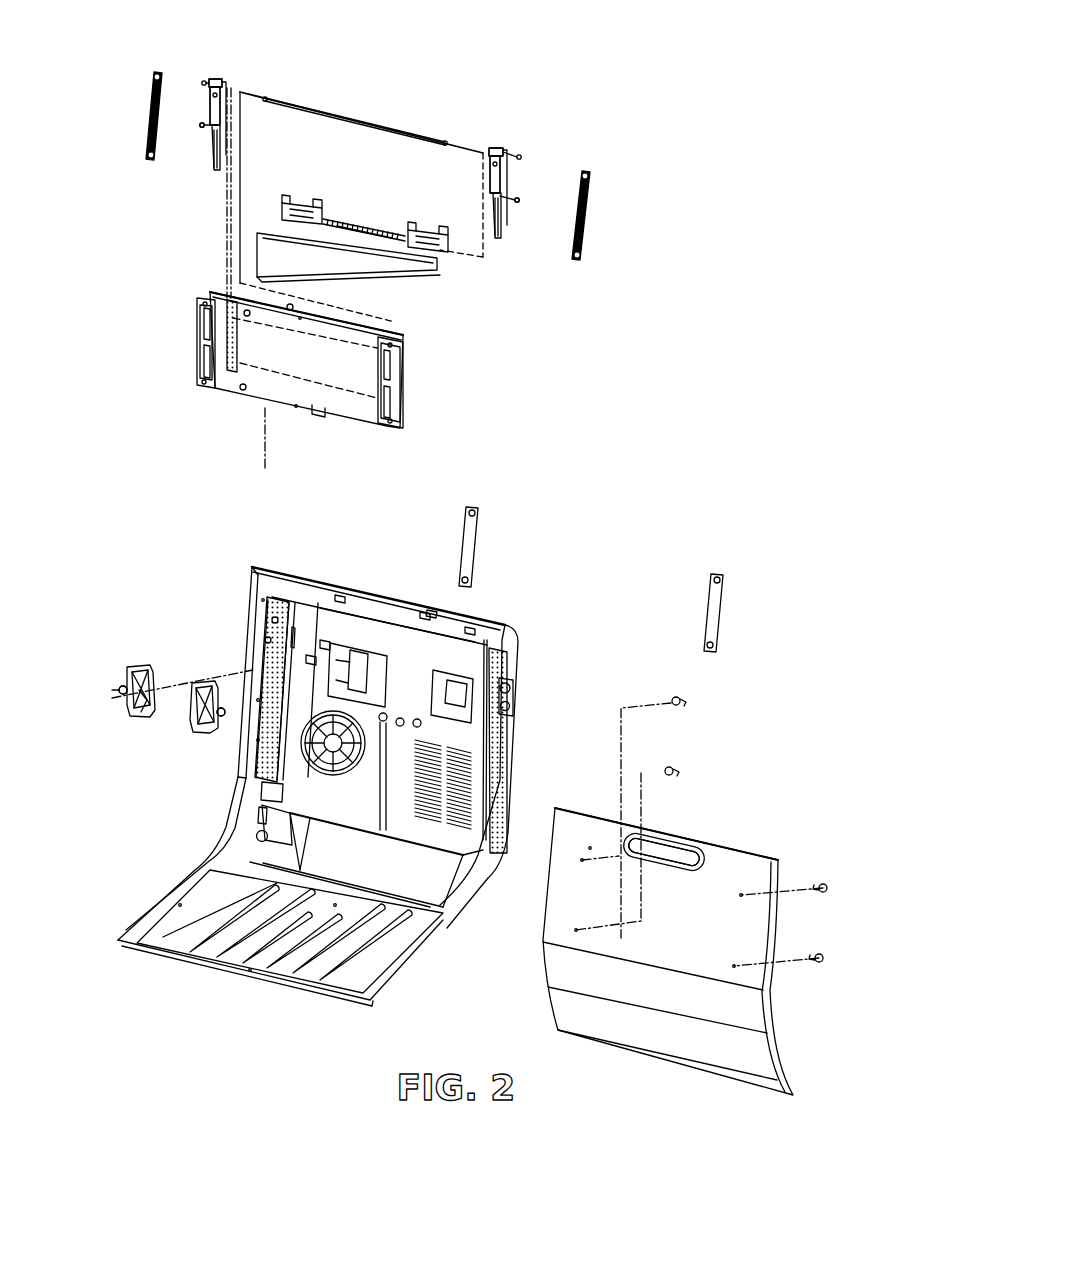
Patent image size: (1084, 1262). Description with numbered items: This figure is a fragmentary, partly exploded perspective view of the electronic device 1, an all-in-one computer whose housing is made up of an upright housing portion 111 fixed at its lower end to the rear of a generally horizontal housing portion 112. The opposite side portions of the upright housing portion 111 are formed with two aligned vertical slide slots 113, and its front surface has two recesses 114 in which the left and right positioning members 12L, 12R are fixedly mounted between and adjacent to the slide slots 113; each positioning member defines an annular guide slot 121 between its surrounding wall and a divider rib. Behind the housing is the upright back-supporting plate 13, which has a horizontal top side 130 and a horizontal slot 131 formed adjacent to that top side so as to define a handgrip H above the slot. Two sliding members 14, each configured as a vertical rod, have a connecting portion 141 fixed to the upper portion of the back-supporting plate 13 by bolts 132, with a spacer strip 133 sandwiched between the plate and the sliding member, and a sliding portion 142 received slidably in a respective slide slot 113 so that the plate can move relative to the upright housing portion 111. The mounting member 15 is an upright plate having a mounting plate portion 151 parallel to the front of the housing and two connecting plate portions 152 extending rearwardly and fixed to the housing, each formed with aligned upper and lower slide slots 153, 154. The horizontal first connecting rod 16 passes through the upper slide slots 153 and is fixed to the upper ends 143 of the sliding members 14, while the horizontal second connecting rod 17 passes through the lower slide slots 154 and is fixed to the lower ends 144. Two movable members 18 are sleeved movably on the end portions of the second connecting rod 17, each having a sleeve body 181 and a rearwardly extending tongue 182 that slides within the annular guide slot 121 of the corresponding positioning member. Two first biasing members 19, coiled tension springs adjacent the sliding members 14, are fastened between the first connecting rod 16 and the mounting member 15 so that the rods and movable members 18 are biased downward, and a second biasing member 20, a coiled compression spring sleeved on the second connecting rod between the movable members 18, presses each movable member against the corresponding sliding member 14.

The electronic device 1 is at (772, 348).
The upright housing portion 111 is at (510, 733).
The generally horizontal housing portion 112 is at (393, 943).
The vertical slide slots 113 is at (327, 652).
The recesses 114 is at (460, 687).
The left positioning member 12L is at (147, 667).
The right positioning member 12R is at (198, 682).
The annular guide slot 121 is at (190, 727).
The back-supporting plate 13 is at (712, 896).
The horizontal top side 130 is at (748, 848).
The horizontal slot 131 is at (690, 837).
The bolts 132 is at (682, 707).
The spacer strip 133 is at (476, 524).
The handgrip H is at (655, 838).
The sliding members 14 is at (364, 149).
The connecting portion 141 is at (213, 150).
The sliding portion 142 is at (222, 110).
The upper ends of the sliding members 143 is at (224, 81).
The lower ends of the sliding members 144 is at (222, 128).
The mounting member 15 is at (295, 374).
The mounting plate portion 151 is at (308, 393).
The connecting plate portions 152 is at (200, 332).
The upper slide slots 153 is at (200, 312).
The lower slide slots 154 is at (200, 357).
The first connecting rod 16 is at (408, 128).
The second connecting rod 17 is at (380, 266).
The movable members 18 is at (365, 219).
The sleeve body 181 is at (290, 203).
The tongue 182 is at (402, 233).
The first biasing members 19 is at (149, 114).
The second biasing member 20 is at (345, 229).